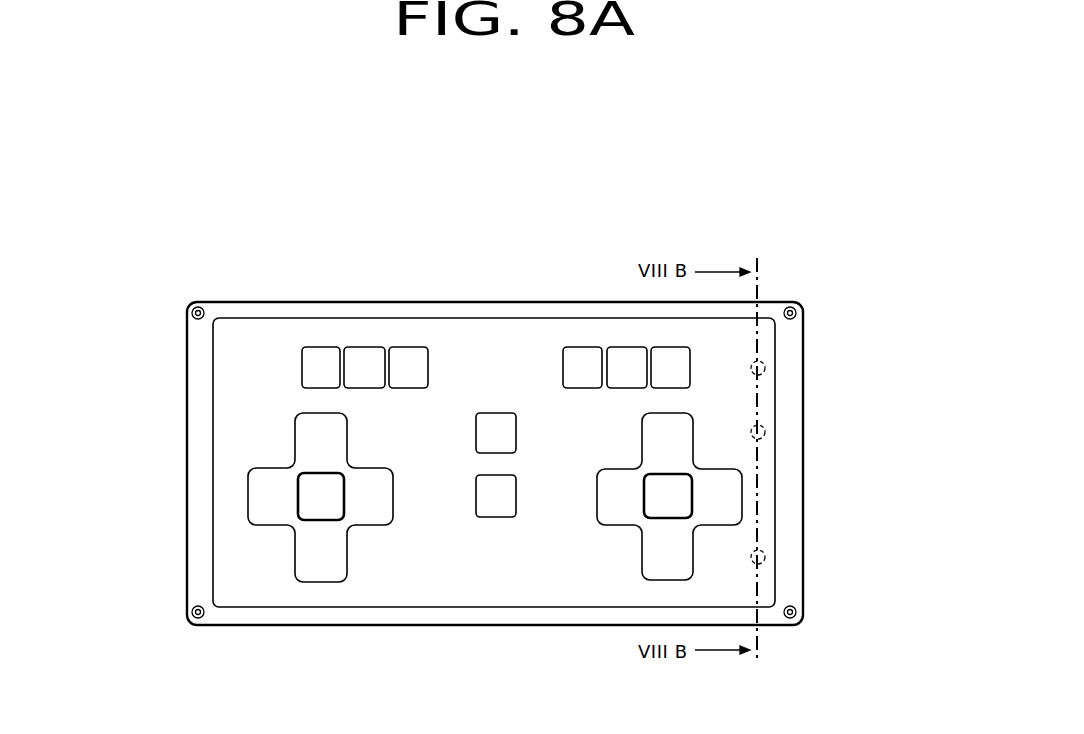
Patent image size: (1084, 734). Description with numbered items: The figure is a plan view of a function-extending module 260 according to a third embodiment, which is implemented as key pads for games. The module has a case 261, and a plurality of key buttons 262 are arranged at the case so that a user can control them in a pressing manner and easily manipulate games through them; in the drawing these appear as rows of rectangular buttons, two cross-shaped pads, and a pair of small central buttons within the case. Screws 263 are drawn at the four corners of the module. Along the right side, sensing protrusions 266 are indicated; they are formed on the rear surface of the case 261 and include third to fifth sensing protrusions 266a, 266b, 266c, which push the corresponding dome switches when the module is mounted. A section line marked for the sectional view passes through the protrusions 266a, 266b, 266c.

The function-extending module 260 is at (172, 395).
The case 261 is at (200, 500).
The key buttons 262 is at (409, 372).
The screw 263 is at (186, 606).
The sensing protrusions 266 is at (857, 465).
The third sensing protrusion 266a is at (820, 558).
The fourth sensing protrusion 266b is at (766, 431).
The fifth sensing protrusion 266c is at (766, 367).